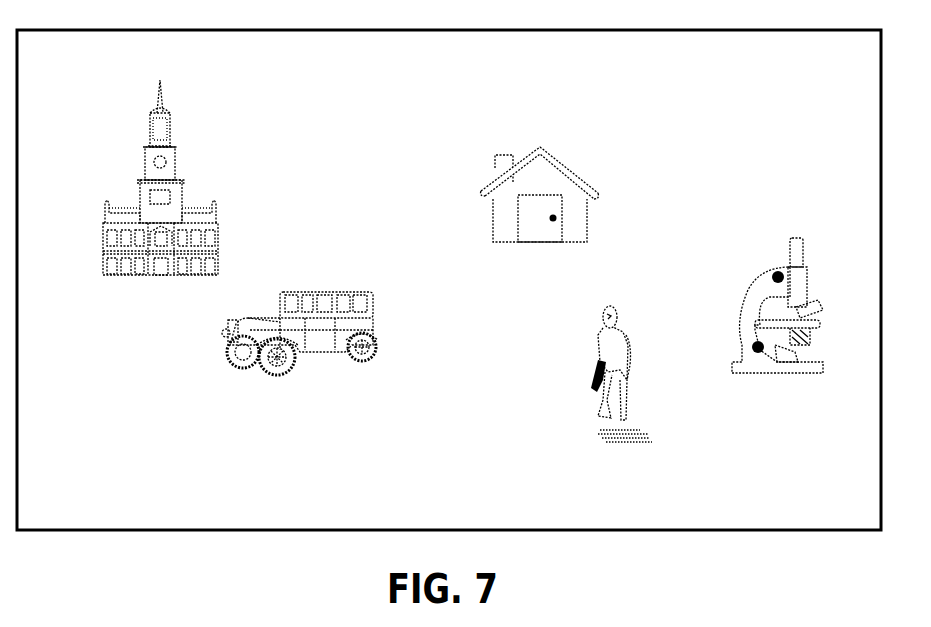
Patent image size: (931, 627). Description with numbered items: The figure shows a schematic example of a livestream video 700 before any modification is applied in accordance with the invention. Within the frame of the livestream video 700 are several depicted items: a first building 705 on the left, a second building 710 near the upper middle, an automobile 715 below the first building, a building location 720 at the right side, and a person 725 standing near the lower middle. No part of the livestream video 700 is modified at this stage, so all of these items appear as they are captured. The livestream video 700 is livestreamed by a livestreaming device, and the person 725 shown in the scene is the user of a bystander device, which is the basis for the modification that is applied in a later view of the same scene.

The livestream video 700 is at (690, 534).
The building 705 is at (235, 159).
The building 710 is at (600, 158).
The automobile 715 is at (336, 384).
The building location 720 is at (756, 217).
The person 725 is at (578, 340).